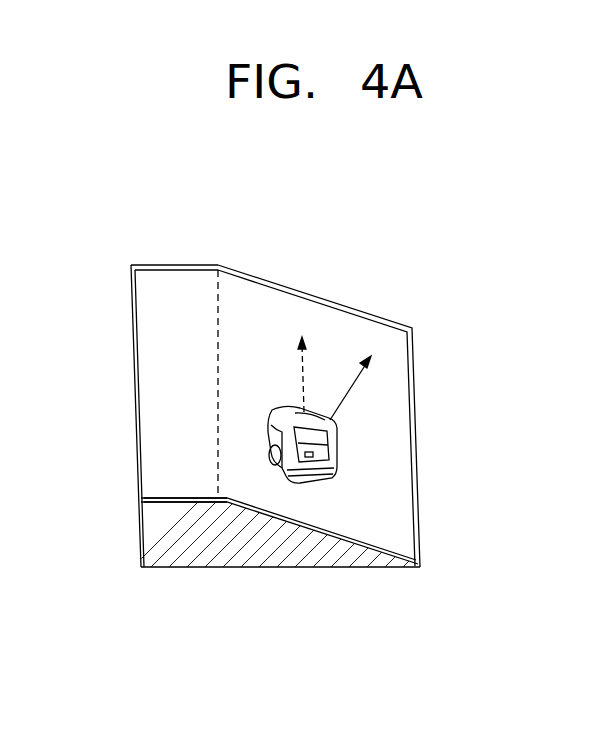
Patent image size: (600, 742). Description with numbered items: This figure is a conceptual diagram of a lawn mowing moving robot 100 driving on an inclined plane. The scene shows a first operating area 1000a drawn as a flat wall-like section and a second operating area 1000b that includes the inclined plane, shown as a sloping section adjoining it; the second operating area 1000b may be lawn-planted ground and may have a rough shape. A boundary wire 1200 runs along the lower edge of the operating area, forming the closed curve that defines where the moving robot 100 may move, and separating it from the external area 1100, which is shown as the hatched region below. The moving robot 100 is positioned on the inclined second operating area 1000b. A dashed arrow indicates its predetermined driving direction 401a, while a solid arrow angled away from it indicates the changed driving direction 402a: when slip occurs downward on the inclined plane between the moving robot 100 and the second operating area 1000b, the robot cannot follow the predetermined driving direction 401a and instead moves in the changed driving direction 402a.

The first operating area 1000a is at (218, 259).
The second operating area 1000b is at (410, 262).
The external area 1100 is at (255, 553).
The boundary wire 1200 is at (178, 496).
The moving robot 100 is at (337, 470).
The predetermined driving direction 401a is at (305, 378).
The changed driving direction 402a is at (358, 381).